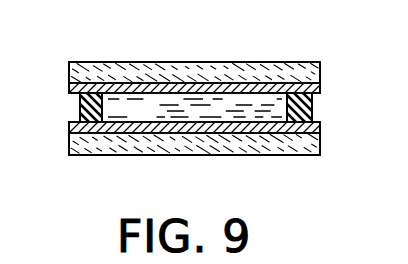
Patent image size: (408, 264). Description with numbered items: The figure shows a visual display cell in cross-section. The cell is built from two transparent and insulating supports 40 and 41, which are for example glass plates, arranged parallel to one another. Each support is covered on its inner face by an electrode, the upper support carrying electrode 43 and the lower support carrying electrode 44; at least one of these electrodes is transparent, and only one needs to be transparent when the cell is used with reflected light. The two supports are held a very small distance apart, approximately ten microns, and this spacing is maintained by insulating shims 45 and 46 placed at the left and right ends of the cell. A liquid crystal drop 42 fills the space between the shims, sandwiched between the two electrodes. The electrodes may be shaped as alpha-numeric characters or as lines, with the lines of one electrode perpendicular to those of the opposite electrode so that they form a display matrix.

The transparent and insulating support 40 is at (250, 70).
The transparent and insulating support 41 is at (282, 148).
The liquid crystal drop 42 is at (218, 117).
The electrode 43 is at (320, 88).
The electrode 44 is at (320, 128).
The insulating shim 45 is at (80, 106).
The insulating shim 46 is at (312, 108).